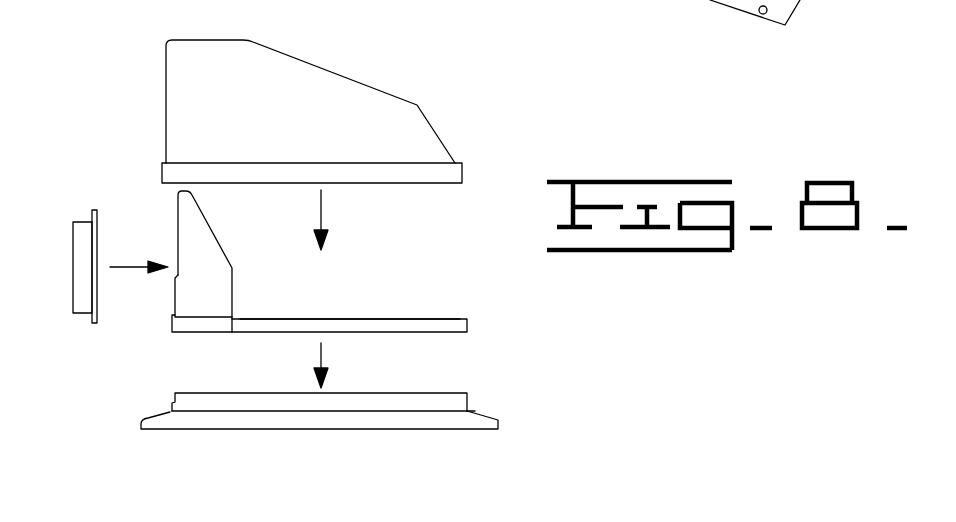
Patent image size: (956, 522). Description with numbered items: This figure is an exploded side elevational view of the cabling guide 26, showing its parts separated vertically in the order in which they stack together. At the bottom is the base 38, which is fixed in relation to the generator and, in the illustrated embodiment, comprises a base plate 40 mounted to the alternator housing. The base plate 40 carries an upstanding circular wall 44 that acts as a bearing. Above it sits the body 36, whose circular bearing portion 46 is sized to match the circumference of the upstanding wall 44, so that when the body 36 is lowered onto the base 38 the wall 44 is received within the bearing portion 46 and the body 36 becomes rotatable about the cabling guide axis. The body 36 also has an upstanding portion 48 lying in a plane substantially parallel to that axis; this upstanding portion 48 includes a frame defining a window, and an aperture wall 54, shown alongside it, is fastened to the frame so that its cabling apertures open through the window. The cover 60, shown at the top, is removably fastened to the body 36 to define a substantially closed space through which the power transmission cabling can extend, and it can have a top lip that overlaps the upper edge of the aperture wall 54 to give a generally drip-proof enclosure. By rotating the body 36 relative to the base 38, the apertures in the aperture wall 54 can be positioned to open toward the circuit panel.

The cabling guide 26 is at (503, 112).
The body 36 is at (450, 315).
The base 38 is at (418, 425).
The base plate 40 is at (468, 410).
The upstanding circular wall 44 is at (453, 402).
The circular bearing portion 46 is at (372, 320).
The upstanding portion 48 is at (185, 215).
The aperture wall 54 is at (84, 303).
The cover 60 is at (307, 63).